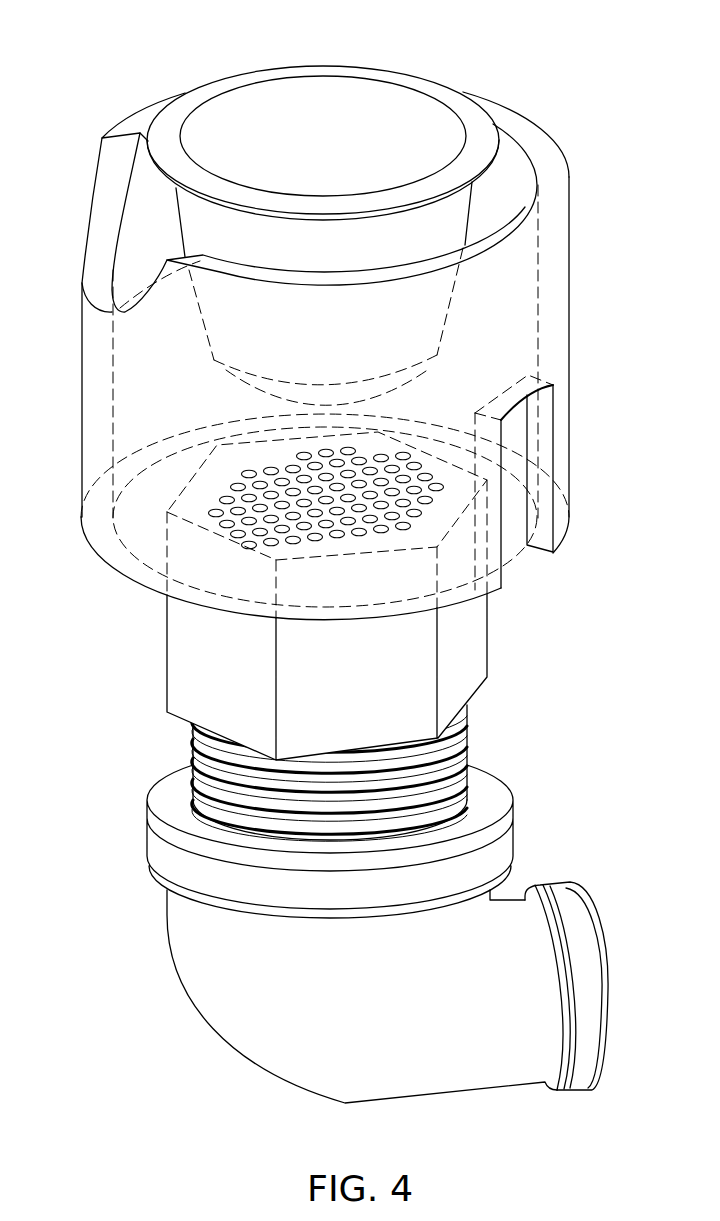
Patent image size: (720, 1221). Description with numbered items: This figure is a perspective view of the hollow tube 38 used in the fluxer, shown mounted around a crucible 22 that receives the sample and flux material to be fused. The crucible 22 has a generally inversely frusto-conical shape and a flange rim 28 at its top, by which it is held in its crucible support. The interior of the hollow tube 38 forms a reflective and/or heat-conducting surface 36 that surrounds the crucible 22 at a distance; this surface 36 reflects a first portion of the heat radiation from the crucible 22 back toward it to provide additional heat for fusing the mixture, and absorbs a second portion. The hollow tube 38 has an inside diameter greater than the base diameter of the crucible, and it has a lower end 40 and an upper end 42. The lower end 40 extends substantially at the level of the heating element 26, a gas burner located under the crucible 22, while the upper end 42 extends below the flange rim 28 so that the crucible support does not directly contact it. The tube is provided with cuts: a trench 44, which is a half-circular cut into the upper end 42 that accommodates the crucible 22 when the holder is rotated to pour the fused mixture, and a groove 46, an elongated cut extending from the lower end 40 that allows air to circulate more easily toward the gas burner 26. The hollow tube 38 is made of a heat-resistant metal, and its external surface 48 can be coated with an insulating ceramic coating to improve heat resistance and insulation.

The crucible 22 is at (363, 118).
The heating element 26 is at (433, 535).
The flange rim 28 is at (238, 82).
The reflective and/or heat-conducting surface 36 is at (150, 200).
The hollow tube 38 is at (594, 214).
The lower end 40 is at (135, 570).
The upper end 42 is at (531, 138).
The trench 44 is at (95, 277).
The groove 46 is at (543, 528).
The external surface 48 is at (507, 307).